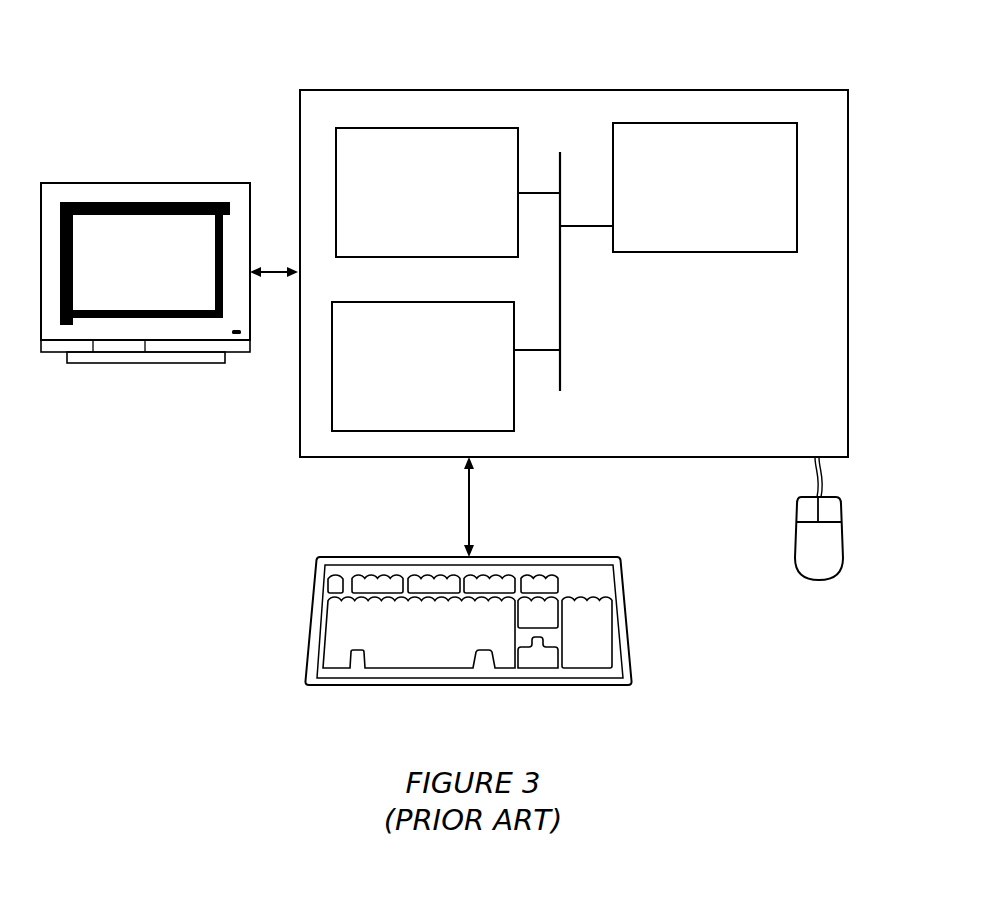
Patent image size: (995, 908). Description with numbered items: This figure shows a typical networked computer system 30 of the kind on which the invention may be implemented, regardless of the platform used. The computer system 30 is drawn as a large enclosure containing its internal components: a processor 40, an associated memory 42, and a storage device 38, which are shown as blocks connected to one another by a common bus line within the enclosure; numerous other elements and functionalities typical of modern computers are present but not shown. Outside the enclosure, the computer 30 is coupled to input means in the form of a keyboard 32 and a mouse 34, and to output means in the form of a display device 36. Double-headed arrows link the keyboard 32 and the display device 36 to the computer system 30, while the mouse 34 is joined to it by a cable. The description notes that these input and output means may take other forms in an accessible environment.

The networked computer system 30 is at (596, 80).
The keyboard 32 is at (420, 649).
The mouse 34 is at (806, 559).
The display device 36 is at (136, 266).
The storage device 38 is at (410, 382).
The processor 40 is at (708, 200).
The memory 42 is at (411, 200).